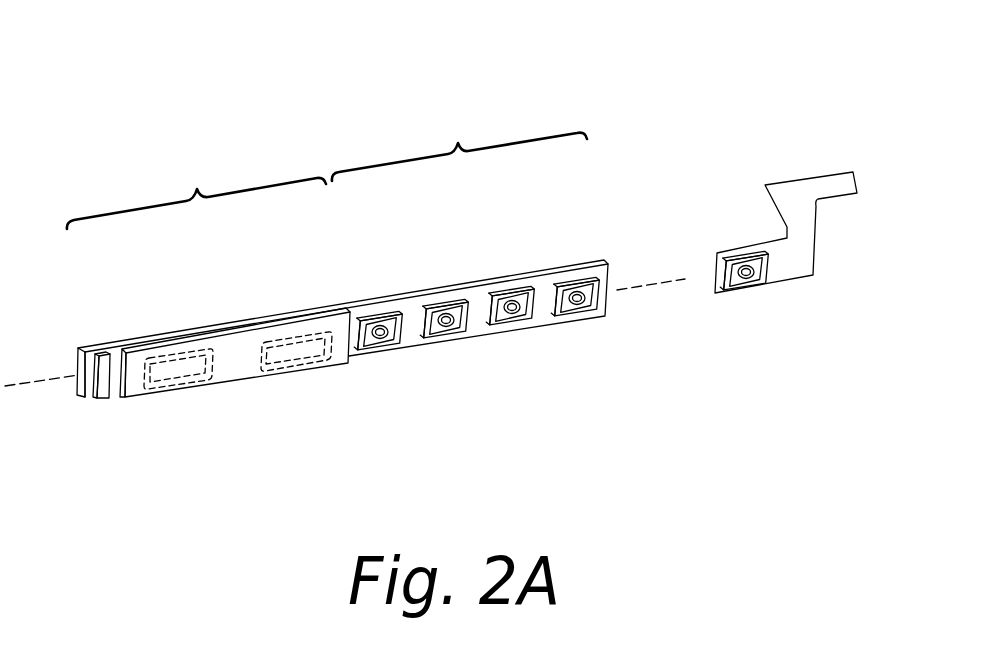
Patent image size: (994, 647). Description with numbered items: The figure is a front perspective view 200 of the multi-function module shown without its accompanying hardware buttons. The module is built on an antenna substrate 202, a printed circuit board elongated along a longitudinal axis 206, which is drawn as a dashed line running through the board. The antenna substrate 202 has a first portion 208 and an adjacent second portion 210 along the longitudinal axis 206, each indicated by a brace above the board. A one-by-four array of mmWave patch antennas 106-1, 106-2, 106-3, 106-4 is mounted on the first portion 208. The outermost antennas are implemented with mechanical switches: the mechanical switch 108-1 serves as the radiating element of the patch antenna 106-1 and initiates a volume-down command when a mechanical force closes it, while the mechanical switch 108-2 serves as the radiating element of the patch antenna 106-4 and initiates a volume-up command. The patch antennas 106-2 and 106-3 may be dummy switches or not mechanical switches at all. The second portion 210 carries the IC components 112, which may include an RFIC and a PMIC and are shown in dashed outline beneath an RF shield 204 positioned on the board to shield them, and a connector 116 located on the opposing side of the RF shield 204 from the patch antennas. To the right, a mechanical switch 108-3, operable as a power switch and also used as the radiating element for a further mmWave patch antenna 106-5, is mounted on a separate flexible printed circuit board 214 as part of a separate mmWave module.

The front perspective view 200 is at (118, 34).
The antenna substrate 202 is at (473, 283).
The RF shield 204 is at (240, 374).
The longitudinal axis 206 is at (16, 385).
The first portion 208 is at (458, 143).
The second portion 210 is at (196, 188).
The flexible printed circuit board 214 is at (780, 183).
The IC components 112 is at (287, 353).
The connector 116 is at (102, 394).
The mmWave patch antenna 106-1 is at (384, 343).
The mmWave patch antenna 106-2 is at (450, 330).
The mmWave patch antenna 106-3 is at (518, 320).
The mmWave patch antenna 106-4 is at (580, 310).
The mmWave patch antenna 106-5 is at (742, 282).
The mechanical switch 108-1 is at (380, 325).
The mechanical switch 108-2 is at (577, 292).
The mechanical switch 108-3 is at (746, 266).